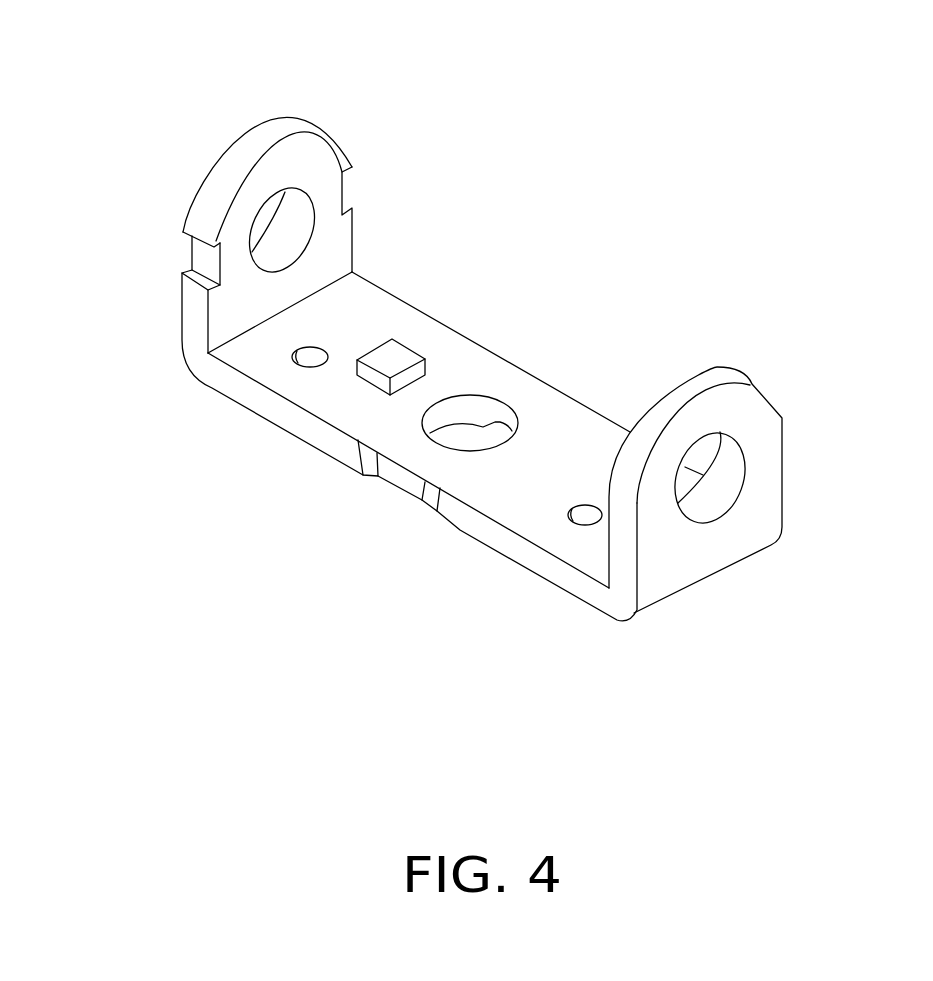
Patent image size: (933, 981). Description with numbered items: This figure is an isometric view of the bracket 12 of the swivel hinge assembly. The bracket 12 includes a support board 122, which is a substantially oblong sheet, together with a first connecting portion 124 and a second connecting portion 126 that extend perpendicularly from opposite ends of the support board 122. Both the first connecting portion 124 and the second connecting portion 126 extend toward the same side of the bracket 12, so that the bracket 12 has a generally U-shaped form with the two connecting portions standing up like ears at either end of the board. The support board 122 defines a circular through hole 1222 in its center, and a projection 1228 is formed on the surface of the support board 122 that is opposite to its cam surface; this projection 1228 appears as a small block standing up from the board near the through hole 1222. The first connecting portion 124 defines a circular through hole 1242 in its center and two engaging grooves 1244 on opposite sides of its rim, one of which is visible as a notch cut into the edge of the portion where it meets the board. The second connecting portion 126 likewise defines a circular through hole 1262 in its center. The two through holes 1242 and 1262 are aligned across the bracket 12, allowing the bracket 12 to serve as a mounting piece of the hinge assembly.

The bracket 12 is at (450, 210).
The support board 122 is at (505, 542).
The circular through hole 1222 is at (485, 408).
The projection 1228 is at (398, 353).
The first connecting portion 124 is at (227, 182).
The circular through hole 1242 is at (297, 213).
The engaging grooves 1244 is at (202, 258).
The second connecting portion 126 is at (682, 390).
The circular through hole 1262 is at (718, 493).